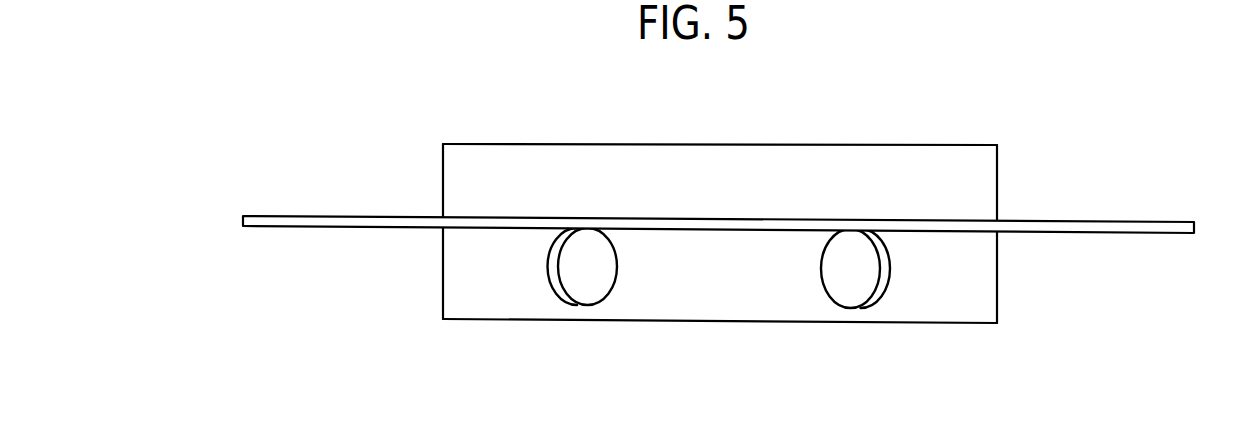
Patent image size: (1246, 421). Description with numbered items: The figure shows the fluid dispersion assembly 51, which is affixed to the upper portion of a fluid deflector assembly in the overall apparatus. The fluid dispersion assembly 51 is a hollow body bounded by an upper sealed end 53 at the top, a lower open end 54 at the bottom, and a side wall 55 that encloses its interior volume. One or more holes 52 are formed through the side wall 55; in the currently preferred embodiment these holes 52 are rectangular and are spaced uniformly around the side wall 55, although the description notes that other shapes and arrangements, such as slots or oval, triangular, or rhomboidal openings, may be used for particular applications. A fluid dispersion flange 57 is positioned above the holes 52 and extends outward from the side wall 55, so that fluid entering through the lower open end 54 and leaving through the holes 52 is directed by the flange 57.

The fluid dispersion assembly 51 is at (685, 210).
The holes 52 is at (557, 294).
The upper sealed end 53 is at (580, 143).
The lower open end 54 is at (720, 322).
The side wall 55 is at (443, 172).
The fluid dispersion flange 57 is at (323, 210).